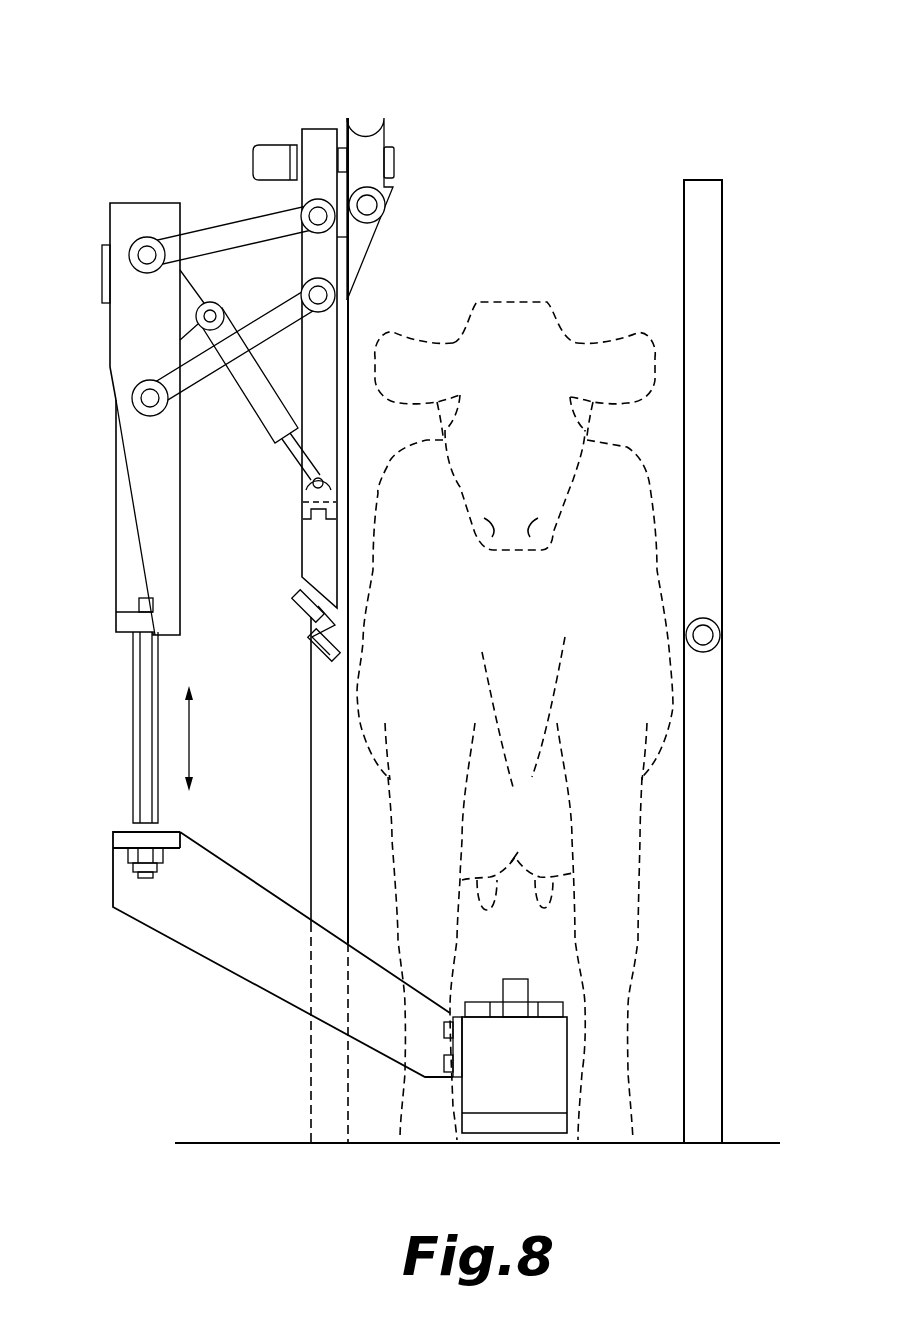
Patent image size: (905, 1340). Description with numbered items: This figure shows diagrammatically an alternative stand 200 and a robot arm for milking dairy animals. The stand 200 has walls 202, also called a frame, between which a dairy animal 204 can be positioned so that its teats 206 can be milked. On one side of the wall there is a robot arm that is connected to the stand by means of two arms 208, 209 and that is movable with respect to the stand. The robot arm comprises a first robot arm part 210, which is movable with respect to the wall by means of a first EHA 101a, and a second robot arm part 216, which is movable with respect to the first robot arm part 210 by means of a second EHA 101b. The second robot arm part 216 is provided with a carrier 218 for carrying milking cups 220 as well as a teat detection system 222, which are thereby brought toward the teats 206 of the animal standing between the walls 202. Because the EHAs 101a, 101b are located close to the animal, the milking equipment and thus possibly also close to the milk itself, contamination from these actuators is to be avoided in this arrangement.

The stand 200 is at (692, 92).
The walls 202 is at (710, 258).
The dairy animal 204 is at (530, 310).
The teats 206 is at (542, 892).
The arm 208 is at (205, 370).
The arm 209 is at (214, 232).
The first robot arm part 210 is at (118, 340).
The first EHA 101a is at (270, 423).
The second EHA 101b is at (143, 758).
The second robot arm part 216 is at (225, 957).
The carrier 218 is at (517, 1123).
The milking cups 220 is at (552, 1010).
The teat detection system 222 is at (512, 988).